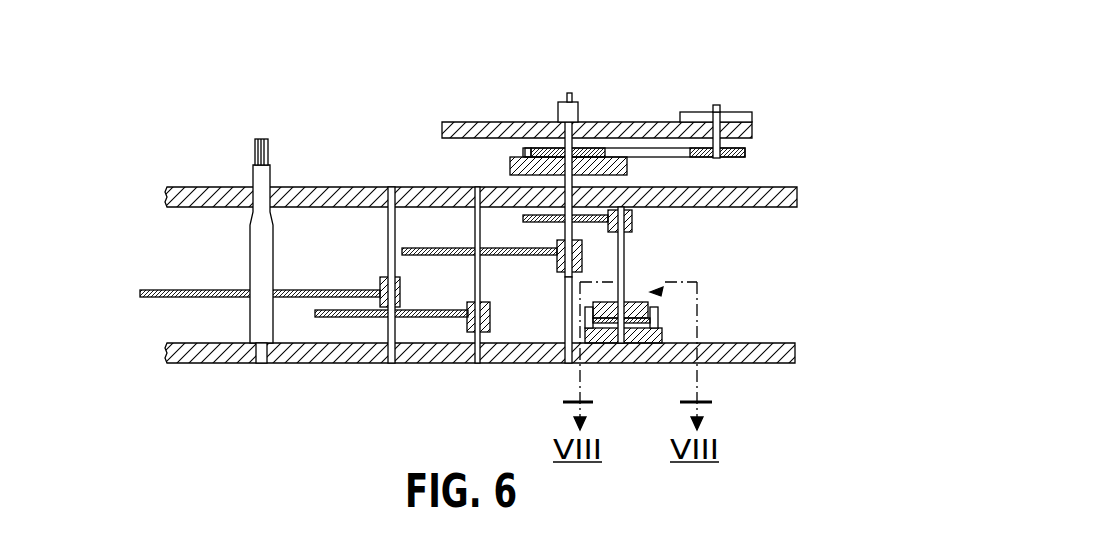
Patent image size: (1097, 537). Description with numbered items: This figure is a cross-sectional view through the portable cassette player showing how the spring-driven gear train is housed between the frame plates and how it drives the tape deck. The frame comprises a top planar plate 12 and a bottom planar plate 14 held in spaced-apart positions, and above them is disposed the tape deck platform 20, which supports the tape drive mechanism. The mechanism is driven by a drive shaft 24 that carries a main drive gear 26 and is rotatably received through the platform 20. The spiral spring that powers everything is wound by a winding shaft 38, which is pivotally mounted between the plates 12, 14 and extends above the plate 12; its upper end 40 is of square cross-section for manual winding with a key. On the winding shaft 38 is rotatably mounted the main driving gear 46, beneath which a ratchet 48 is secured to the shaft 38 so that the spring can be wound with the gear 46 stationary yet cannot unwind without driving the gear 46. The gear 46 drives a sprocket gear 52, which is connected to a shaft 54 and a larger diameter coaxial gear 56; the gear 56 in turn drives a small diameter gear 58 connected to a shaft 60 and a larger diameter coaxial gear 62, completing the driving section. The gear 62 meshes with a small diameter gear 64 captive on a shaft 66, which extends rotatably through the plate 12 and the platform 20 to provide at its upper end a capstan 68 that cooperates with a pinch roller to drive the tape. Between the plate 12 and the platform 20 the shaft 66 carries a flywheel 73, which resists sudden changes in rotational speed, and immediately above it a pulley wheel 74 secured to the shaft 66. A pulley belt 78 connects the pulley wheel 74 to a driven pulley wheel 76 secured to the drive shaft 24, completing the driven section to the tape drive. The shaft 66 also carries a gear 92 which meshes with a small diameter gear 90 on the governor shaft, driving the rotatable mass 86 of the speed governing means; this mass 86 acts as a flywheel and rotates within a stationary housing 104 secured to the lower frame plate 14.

The top planar plate 12 is at (770, 188).
The bottom planar plate 14 is at (775, 343).
The tape deck platform 20 is at (617, 122).
The drive shaft 24 is at (716, 105).
The main drive gear 26 is at (742, 116).
The winding shaft 38 is at (253, 178).
The upper end of winding shaft 40 is at (263, 150).
The main driving gear 46 is at (177, 292).
The ratchet 48 is at (257, 313).
The sprocket gear 52 is at (380, 280).
The shaft 54 is at (388, 227).
The larger diameter coaxial gear 56 is at (363, 318).
The small diameter gear 58 is at (465, 333).
The shaft 60 is at (478, 275).
The larger diameter coaxial gear 62 is at (436, 250).
The small diameter gear 64 is at (582, 255).
The shaft 66 is at (565, 310).
The capstan 68 is at (570, 100).
The flywheel 73 is at (523, 152).
The pulley wheel 74 is at (510, 167).
The driven pulley wheel 76 is at (741, 148).
The pulley belt 78 is at (654, 152).
The rotatable mass 86 is at (660, 291).
The small diameter gear 90 is at (633, 221).
The gear 92 is at (538, 187).
The stationary housing 104 is at (658, 315).